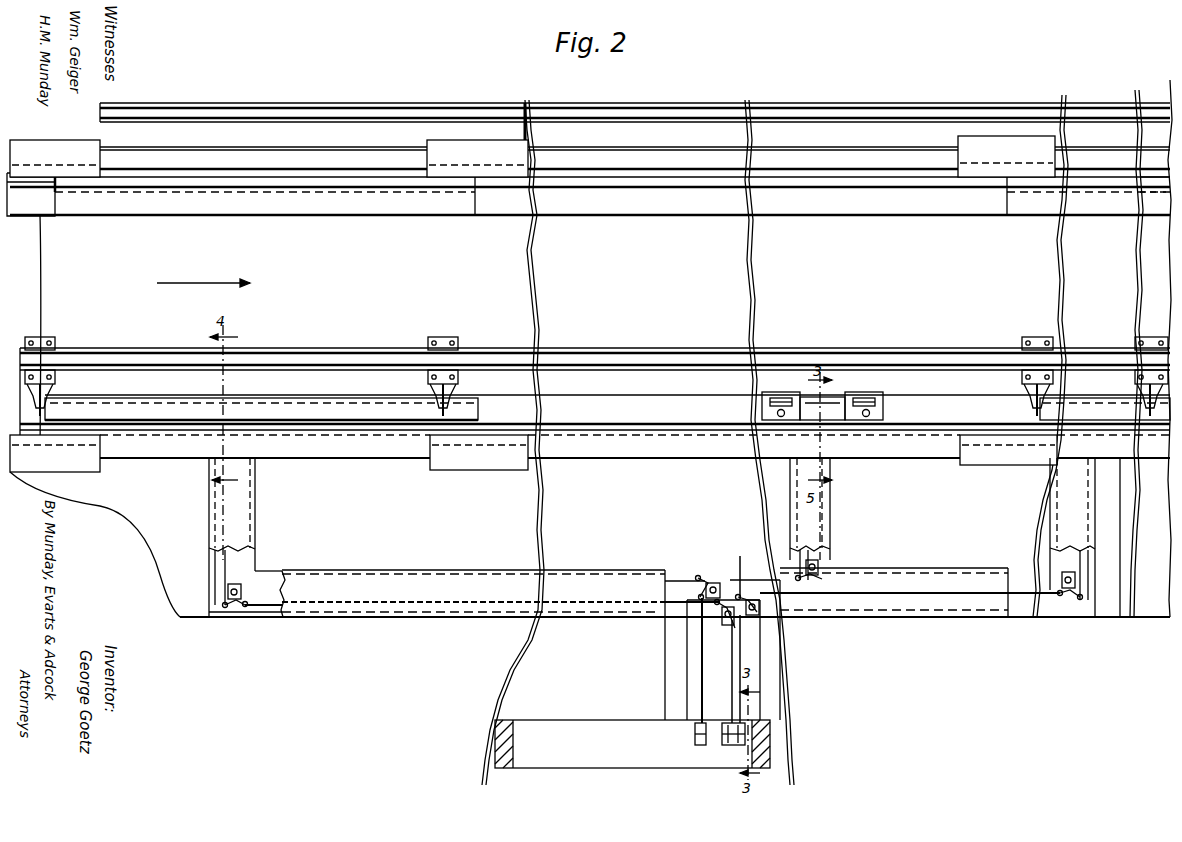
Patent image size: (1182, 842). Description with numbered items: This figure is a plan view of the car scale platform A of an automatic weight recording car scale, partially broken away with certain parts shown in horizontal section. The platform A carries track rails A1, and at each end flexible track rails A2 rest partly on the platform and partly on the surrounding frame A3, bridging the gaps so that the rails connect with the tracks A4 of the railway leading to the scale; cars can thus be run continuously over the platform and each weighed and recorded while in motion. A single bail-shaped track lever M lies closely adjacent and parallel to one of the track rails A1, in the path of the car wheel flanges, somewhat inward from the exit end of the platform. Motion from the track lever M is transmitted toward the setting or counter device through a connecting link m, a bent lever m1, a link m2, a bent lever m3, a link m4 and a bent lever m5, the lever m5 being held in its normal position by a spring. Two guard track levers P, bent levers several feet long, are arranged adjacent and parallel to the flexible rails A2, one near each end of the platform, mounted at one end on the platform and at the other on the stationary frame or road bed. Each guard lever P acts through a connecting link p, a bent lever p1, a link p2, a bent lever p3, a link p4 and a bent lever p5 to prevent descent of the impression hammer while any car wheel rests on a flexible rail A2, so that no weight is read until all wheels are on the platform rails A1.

The scale platform A is at (763, 272).
The track rails A1 is at (763, 178).
The flexible track rails A2 is at (287, 180).
The surrounding frame A3 is at (240, 205).
The tracks A4 is at (1162, 180).
The guard track levers P is at (1093, 408).
The connecting link p is at (213, 522).
The bent lever p1 is at (229, 612).
The link p2 is at (270, 607).
The bent lever p3 is at (722, 618).
The link p4 is at (738, 650).
The bent lever p5 is at (732, 748).
The track lever M is at (840, 415).
The connecting link m is at (832, 552).
The bent lever m1 is at (822, 580).
The link m2 is at (740, 556).
The bent lever m3 is at (697, 579).
The link m4 is at (703, 662).
The bent lever m5 is at (702, 748).